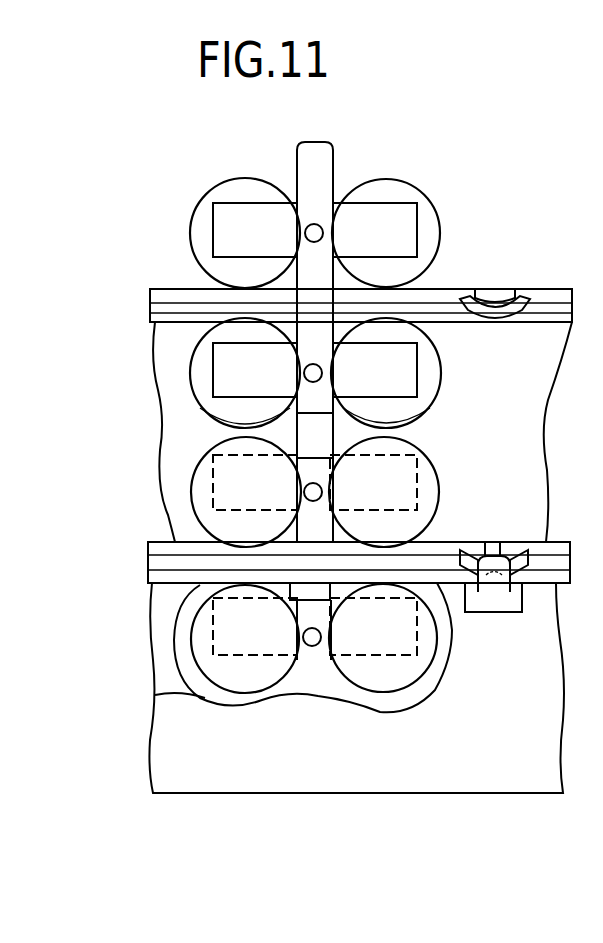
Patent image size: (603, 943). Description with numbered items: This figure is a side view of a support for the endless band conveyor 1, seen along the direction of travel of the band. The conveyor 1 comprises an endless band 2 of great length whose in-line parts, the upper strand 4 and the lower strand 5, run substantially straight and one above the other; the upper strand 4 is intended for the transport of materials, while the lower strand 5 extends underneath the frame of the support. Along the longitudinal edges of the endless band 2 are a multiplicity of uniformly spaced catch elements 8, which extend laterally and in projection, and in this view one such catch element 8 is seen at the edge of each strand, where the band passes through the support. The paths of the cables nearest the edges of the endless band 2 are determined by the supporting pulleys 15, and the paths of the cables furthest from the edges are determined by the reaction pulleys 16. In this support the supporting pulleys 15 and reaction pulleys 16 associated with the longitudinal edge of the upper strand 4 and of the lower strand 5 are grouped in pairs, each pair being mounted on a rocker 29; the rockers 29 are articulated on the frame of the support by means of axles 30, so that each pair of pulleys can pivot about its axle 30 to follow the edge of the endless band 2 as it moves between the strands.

The endless band conveyor 1 is at (440, 192).
The endless band 2 is at (160, 447).
The upper strand 4 is at (542, 372).
The lower strand 5 is at (465, 760).
The catch elements 8 is at (497, 302).
The supporting rollers 15 is at (201, 397).
The reaction rollers 16 is at (232, 192).
The rockers 29 is at (400, 216).
The axles 30 is at (306, 226).